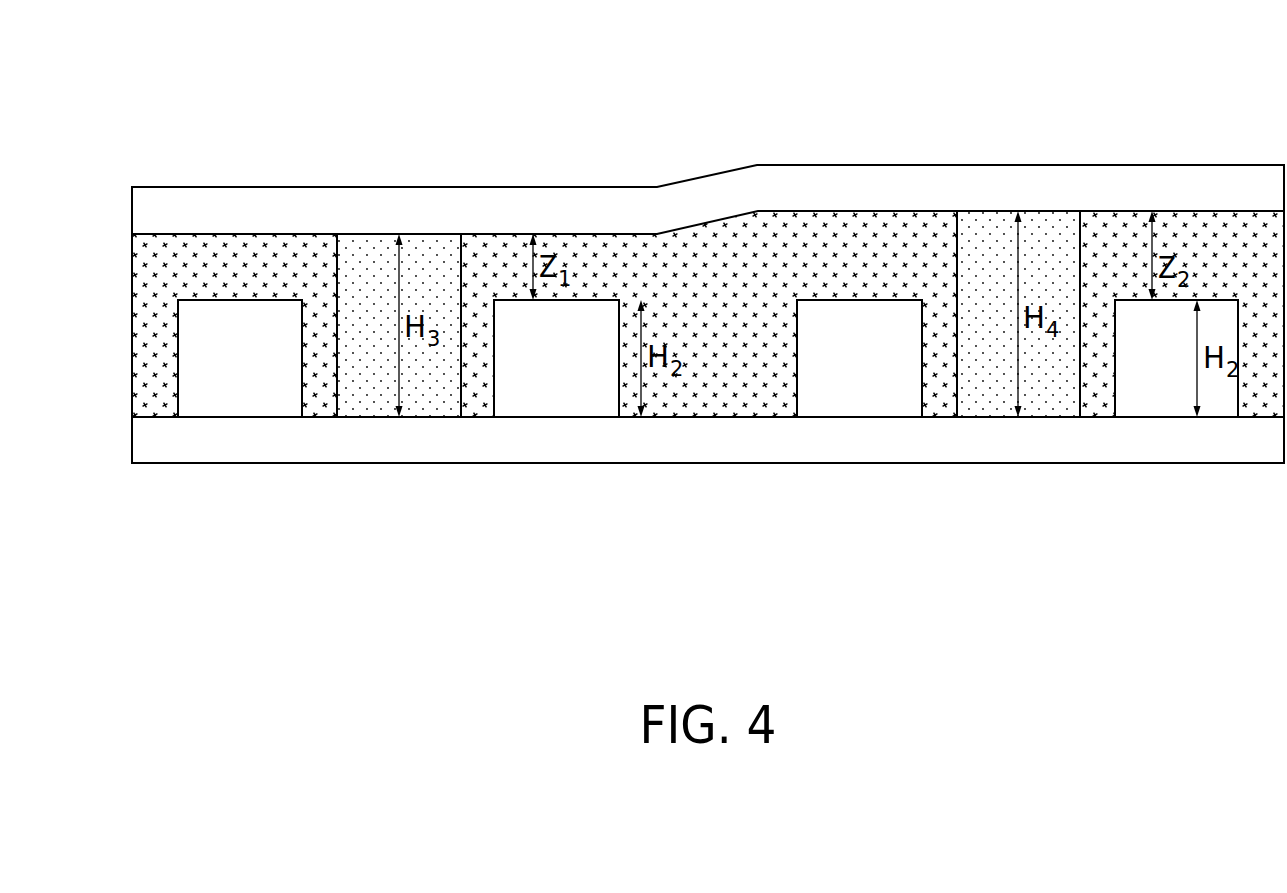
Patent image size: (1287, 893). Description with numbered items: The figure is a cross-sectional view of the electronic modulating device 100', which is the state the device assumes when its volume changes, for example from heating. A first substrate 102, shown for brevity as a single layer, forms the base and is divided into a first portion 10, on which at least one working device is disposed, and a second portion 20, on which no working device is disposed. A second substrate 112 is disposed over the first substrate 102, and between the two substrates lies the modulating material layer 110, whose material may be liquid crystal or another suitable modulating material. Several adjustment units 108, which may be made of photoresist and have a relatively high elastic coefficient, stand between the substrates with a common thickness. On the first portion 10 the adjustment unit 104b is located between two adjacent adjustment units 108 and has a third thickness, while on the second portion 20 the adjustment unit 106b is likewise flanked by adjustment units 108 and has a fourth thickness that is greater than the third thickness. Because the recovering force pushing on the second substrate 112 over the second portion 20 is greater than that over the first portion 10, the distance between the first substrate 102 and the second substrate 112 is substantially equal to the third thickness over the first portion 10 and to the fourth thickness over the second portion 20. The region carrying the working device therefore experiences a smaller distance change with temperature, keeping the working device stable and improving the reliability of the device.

The electronic modulating device 100' is at (66, 79).
The first portion 10 is at (645, 78).
The second portion 20 is at (772, 78).
The first substrate 102 is at (148, 441).
The adjustment unit 104b is at (372, 405).
The adjustment unit 106b is at (991, 405).
The adjustment unit 108 is at (240, 405).
The modulating material layer 110 is at (167, 405).
The second substrate 112 is at (146, 208).